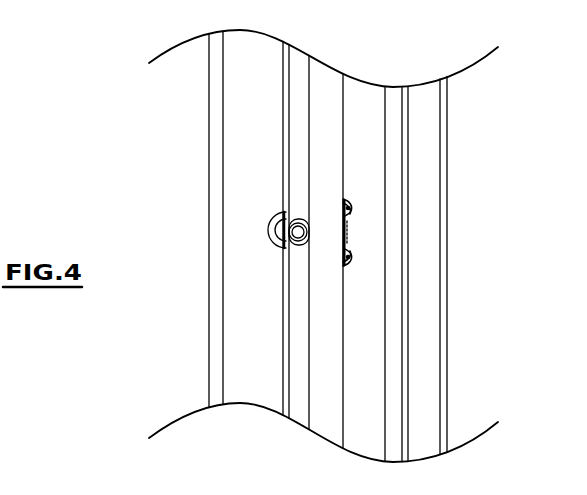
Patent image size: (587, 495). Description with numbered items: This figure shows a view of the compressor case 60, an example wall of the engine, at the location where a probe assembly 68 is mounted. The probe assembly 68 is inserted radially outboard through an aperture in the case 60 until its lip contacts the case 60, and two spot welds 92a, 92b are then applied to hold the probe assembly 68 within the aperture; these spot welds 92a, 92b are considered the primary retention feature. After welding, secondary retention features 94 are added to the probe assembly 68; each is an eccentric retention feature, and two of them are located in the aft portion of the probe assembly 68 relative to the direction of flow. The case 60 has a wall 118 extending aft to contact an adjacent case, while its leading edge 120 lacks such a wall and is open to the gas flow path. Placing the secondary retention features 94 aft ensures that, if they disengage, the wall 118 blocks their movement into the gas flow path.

The compressor case 60 is at (363, 390).
The probe assembly 68 is at (259, 189).
The spot weld 92a is at (252, 239).
The spot weld 92b is at (365, 231).
The secondary retention feature 94 is at (344, 203).
The wall 118 is at (425, 321).
The leading edge 120 is at (209, 372).